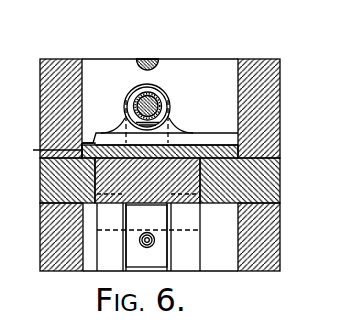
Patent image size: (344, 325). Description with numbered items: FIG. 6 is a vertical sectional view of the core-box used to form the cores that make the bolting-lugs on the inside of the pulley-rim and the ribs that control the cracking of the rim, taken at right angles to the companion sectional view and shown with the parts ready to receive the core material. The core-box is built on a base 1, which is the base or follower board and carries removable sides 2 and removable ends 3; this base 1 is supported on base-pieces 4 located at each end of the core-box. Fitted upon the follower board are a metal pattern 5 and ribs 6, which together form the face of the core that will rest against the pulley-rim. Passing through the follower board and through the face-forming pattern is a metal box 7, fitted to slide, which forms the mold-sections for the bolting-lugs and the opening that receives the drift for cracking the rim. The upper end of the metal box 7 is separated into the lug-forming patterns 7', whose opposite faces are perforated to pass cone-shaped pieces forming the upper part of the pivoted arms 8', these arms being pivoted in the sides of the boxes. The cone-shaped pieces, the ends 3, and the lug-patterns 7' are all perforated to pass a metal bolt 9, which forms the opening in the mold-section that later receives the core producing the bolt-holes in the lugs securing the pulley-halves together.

The base of the core-box 1 is at (280, 183).
The removable sides 2 is at (66, 62).
The removable ends 3 is at (184, 65).
The base-pieces 4 is at (40, 235).
The metal pattern 5 is at (50, 144).
The ribs 6 is at (209, 141).
The metal box 7 is at (160, 232).
The lug-forming patterns 7' is at (146, 110).
The pivoted arms 8' is at (146, 237).
The metal bolt 9 is at (152, 112).